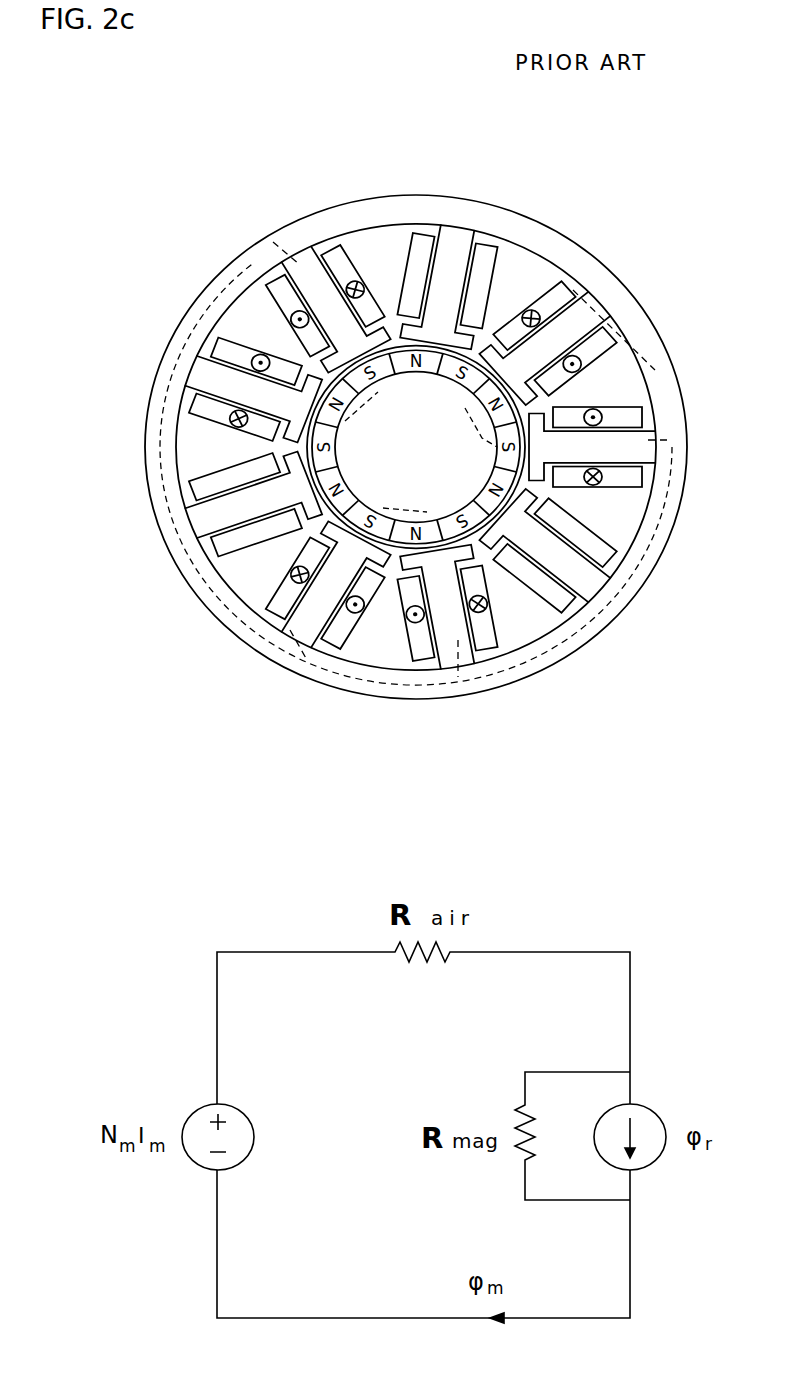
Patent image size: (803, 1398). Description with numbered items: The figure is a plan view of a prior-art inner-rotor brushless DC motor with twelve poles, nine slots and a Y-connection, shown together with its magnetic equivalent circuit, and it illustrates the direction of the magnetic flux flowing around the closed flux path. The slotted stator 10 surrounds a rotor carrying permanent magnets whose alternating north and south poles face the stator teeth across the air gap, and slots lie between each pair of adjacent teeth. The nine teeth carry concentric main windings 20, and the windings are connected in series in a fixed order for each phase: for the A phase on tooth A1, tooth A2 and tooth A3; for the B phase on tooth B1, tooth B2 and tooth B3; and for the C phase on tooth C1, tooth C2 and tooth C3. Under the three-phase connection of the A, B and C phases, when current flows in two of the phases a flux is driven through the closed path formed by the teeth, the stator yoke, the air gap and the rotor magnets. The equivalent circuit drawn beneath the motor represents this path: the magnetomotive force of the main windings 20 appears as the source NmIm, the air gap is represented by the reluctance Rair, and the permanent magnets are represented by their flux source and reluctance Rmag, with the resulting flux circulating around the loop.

The stator 10 is at (550, 247).
The main windings 20 is at (570, 290).
The tooth A1 is at (545, 446).
The tooth B1 is at (551, 341).
The tooth C1 is at (446, 285).
The tooth A2 is at (328, 305).
The tooth B2 is at (250, 391).
The tooth C2 is at (250, 503).
The tooth A3 is at (328, 589).
The tooth B3 is at (446, 609).
The tooth C3 is at (551, 552).